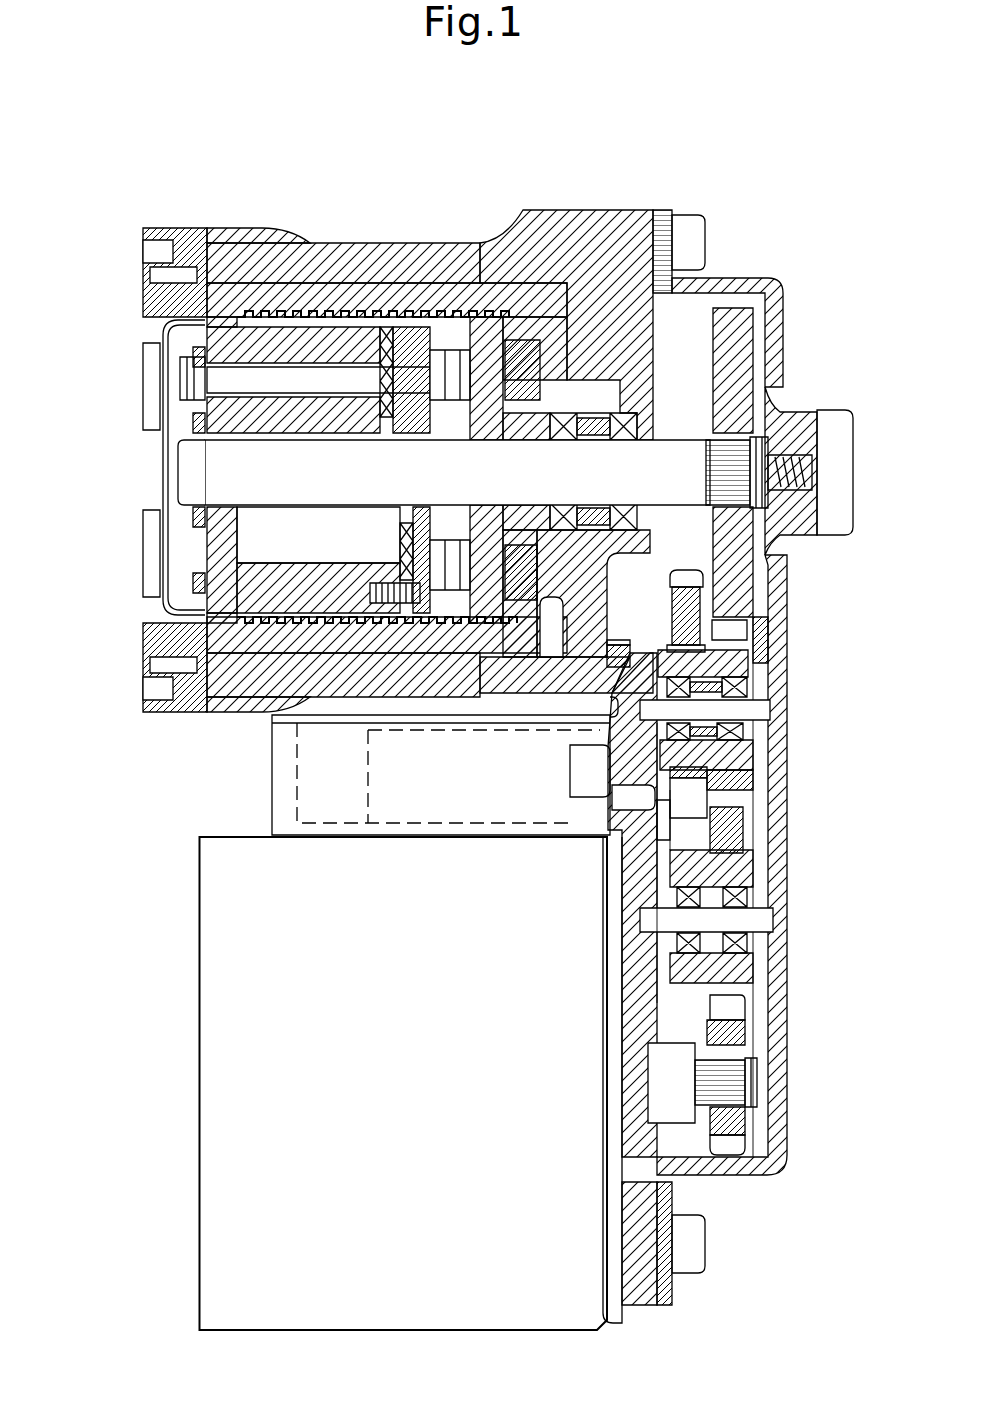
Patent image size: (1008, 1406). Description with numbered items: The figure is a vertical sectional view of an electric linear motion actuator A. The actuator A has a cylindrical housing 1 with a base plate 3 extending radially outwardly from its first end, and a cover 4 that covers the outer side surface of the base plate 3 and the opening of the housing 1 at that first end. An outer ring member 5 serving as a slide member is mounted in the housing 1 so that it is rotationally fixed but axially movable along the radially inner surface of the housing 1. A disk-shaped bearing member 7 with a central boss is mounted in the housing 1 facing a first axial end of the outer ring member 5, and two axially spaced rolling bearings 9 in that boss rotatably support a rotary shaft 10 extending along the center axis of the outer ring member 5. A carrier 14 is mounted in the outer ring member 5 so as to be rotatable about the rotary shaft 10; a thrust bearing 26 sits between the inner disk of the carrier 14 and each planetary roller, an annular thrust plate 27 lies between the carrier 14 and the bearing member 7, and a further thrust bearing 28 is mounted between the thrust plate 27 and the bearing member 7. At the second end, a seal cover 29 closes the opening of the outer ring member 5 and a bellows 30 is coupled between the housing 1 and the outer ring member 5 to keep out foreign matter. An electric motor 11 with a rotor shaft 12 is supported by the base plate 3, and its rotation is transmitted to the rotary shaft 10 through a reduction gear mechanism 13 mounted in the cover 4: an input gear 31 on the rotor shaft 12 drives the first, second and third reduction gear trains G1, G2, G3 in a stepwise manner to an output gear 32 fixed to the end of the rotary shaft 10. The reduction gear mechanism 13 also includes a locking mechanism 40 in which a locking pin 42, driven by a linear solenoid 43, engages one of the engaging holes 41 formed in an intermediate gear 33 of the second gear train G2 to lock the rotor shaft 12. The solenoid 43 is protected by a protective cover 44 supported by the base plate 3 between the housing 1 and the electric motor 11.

The electric linear motion actuator A is at (222, 212).
The cylindrical housing 1 is at (320, 240).
The base plate 3 is at (635, 1235).
The cover 4 is at (700, 800).
The outer ring member 5 is at (352, 290).
The bearing member 7 is at (598, 280).
The rolling bearings 9 is at (598, 440).
The rotary shaft 10 is at (210, 465).
The electric motor 11 is at (200, 1030).
The rotor shaft 12 is at (655, 1070).
The reduction gear mechanism 13 is at (758, 760).
The carrier 14 is at (195, 600).
The thrust bearing 26 is at (390, 325).
The annular thrust plate 27 is at (478, 325).
The thrust bearing 28 is at (520, 352).
The seal cover 29 is at (150, 375).
The bellows 30 is at (150, 240).
The input gear 31 is at (740, 1120).
The output gear 32 is at (745, 355).
The intermediate gear 33 is at (690, 595).
The locking mechanism 40 is at (708, 795).
The engaging holes 41 is at (720, 807).
The locking pin 42 is at (600, 795).
The linear solenoid 43 is at (430, 810).
The protective cover 44 is at (280, 770).
The first reduction gear train G1 is at (750, 1020).
The second reduction gear train G2 is at (665, 835).
The third reduction gear train G3 is at (760, 625).